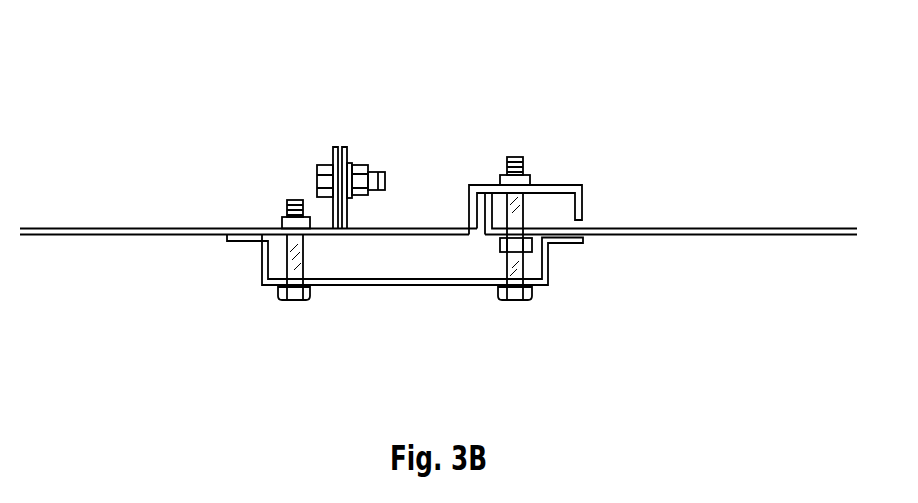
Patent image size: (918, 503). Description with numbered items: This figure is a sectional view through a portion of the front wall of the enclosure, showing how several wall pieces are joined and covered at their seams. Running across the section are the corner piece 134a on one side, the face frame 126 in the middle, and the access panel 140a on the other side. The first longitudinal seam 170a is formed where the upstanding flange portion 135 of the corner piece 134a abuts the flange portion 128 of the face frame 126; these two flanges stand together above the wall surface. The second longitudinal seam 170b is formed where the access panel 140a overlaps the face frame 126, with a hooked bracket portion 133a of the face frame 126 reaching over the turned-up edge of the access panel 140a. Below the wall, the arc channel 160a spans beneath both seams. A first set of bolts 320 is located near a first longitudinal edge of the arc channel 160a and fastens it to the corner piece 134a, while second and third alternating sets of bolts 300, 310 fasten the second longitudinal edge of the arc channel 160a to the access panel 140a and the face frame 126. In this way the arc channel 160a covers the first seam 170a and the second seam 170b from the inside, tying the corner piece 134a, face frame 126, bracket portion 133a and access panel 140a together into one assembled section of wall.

The face frame 126 is at (406, 228).
The flange portion 128 is at (369, 172).
The clamp bracket 133a is at (565, 185).
The corner piece 134a is at (147, 228).
The flange portion 135 is at (334, 147).
The access panel 140a is at (735, 227).
The arc channel 160a is at (400, 285).
The first longitudinal seam 170a is at (342, 130).
The second longitudinal seam 170b is at (539, 214).
The second set of bolts 300 is at (520, 298).
The third set of bolts 310 is at (525, 245).
The first set of bolts 320 is at (295, 299).